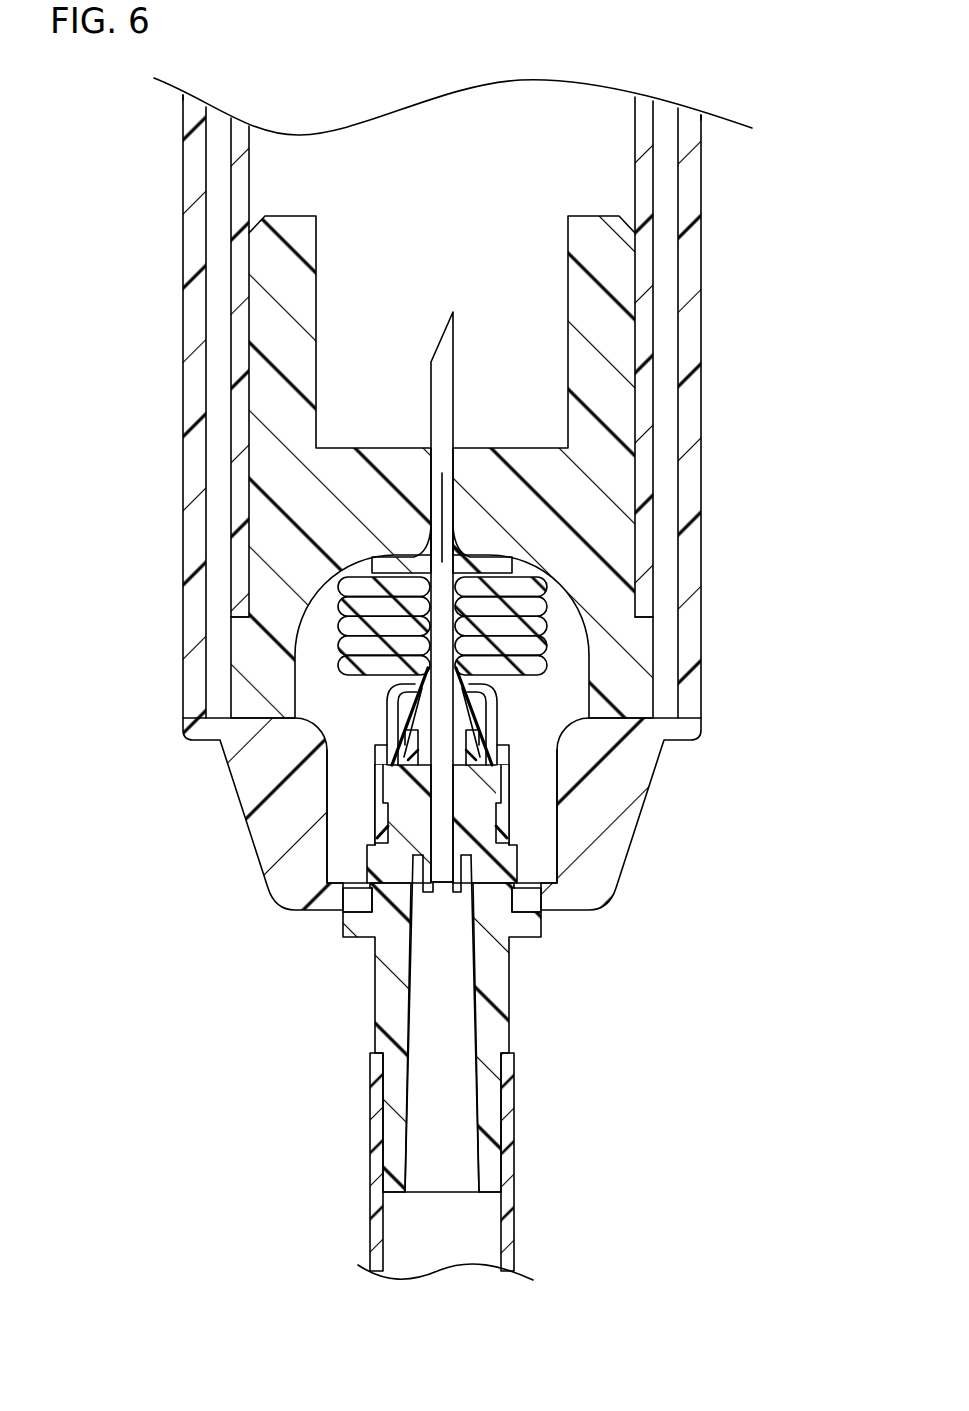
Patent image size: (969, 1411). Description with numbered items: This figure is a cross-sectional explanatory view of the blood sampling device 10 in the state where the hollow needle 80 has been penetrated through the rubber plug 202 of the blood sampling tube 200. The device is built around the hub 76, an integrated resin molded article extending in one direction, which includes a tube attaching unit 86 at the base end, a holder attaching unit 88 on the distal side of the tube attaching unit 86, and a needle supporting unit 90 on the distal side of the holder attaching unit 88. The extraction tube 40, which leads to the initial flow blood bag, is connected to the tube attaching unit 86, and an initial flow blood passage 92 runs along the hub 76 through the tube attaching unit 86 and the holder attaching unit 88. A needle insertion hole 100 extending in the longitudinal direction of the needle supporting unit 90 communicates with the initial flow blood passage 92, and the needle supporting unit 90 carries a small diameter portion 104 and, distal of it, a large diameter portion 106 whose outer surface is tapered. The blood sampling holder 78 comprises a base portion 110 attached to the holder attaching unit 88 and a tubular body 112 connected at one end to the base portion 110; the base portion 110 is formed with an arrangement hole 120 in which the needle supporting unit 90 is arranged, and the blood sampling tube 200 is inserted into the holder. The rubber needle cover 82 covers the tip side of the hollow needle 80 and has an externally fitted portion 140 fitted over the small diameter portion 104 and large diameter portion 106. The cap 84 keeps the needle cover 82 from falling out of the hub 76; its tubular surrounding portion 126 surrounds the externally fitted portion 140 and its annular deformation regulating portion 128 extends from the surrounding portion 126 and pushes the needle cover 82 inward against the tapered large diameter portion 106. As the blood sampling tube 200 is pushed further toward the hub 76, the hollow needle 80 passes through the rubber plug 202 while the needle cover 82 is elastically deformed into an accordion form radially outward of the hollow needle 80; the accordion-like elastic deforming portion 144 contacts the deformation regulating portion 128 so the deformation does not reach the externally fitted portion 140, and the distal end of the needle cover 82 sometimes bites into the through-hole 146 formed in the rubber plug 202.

The blood sampling device 10 is at (409, 31).
The extraction tube 40 is at (506, 1232).
The hub 76 is at (530, 975).
The blood sampling holder 78 is at (712, 338).
The hollow needle 80 is at (446, 392).
The needle cover 82 is at (468, 566).
The cap 84 is at (361, 756).
The tube attaching unit 86 is at (503, 1034).
The holder attaching unit 88 is at (365, 924).
The needle supporting unit 90 is at (383, 780).
The initial flow blood passage 92 is at (447, 1178).
The needle insertion hole 100 is at (445, 833).
The small diameter portion 104 is at (422, 740).
The large diameter portion 106 is at (410, 707).
The base portion 110 is at (623, 817).
The tubular body 112 is at (688, 272).
The arrangement hole 120 is at (538, 828).
The surrounding portion 126 is at (490, 738).
The deformation regulating portion 128 is at (483, 695).
The externally fitted portion 140 is at (481, 743).
The accordion-like elastic deforming portion 144 is at (543, 607).
The through-hole 146 is at (452, 460).
The blood sampling tube 200 is at (640, 155).
The rubber plug 202 is at (634, 668).